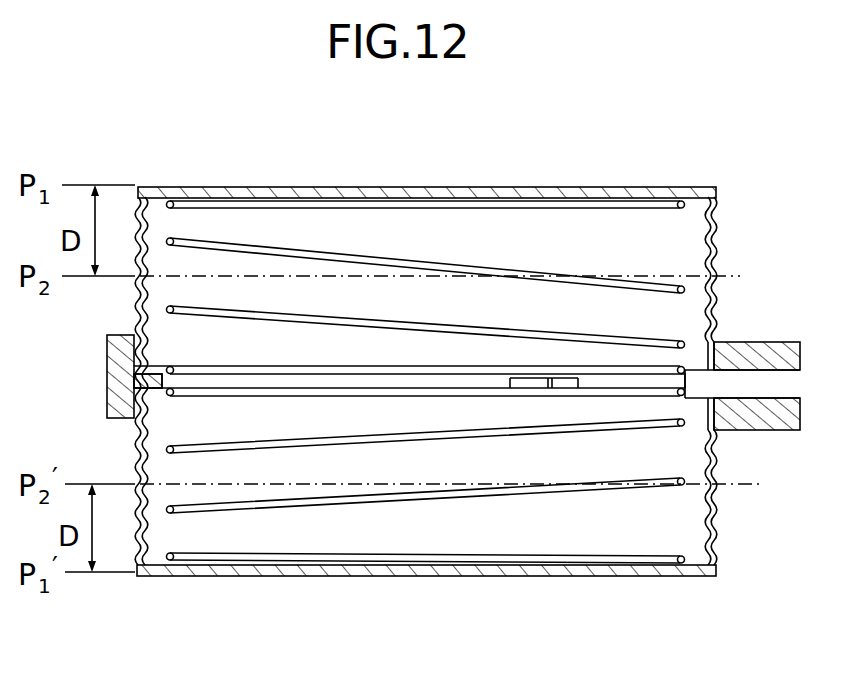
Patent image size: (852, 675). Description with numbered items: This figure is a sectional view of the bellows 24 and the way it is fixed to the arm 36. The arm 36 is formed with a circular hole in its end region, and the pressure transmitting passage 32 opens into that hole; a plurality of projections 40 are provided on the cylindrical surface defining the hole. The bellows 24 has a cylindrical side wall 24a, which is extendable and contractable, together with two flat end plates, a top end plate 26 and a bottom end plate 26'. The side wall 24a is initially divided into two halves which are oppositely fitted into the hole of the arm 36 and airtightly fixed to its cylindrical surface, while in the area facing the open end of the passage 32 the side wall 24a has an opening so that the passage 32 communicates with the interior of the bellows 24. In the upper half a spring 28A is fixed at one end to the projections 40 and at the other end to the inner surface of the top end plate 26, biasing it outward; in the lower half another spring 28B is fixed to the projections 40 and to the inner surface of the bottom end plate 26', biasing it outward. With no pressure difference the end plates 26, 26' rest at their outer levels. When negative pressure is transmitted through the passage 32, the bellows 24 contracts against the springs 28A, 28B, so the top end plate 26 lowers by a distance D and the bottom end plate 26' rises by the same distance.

The bellows 24 is at (417, 387).
The cylindrical side wall 24a is at (140, 316).
The top end plate 26 is at (427, 155).
The bottom end plate 26' is at (426, 613).
The spring 28A is at (650, 282).
The spring 28B is at (266, 506).
The pressure transmitting passage 32 is at (763, 385).
The arm 36 is at (757, 422).
The projections 40 is at (532, 380).